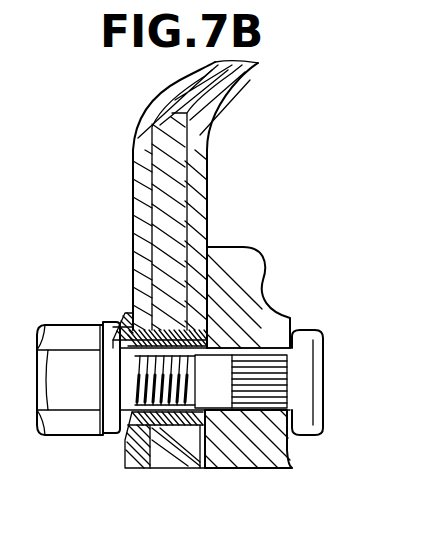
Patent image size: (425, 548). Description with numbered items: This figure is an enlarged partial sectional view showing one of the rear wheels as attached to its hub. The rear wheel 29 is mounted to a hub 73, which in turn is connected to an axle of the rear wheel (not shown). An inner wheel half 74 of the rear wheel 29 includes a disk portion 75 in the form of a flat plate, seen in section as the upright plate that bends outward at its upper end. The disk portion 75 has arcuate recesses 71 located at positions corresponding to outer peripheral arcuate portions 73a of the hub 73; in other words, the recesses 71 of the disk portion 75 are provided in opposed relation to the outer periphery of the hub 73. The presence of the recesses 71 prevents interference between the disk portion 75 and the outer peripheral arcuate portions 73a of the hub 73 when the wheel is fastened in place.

The rear wheel 29 is at (106, 99).
The arcuate recesses 71 is at (198, 239).
The hub 73 is at (265, 283).
The outer peripheral arcuate portions 73a is at (185, 250).
The inner wheel half 74 is at (241, 94).
The disk portion 75 is at (209, 155).